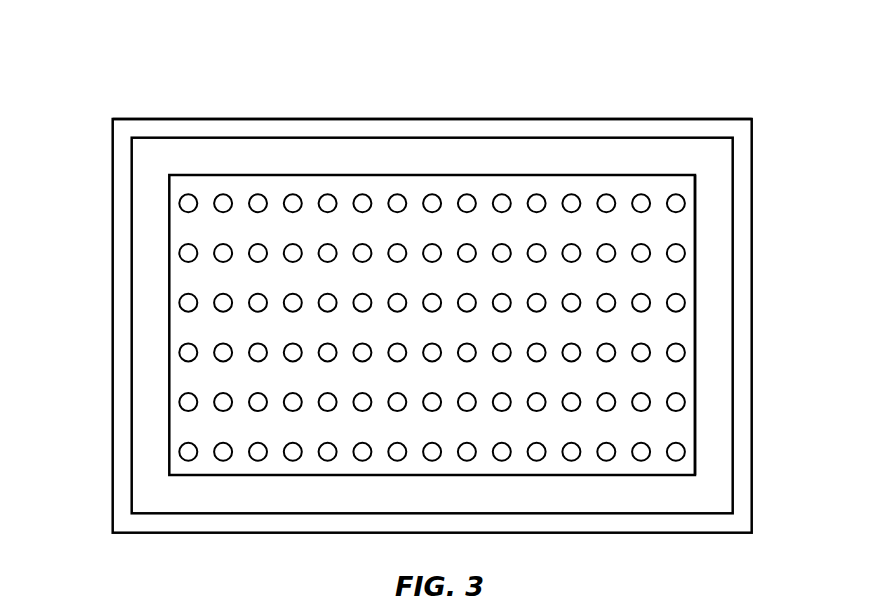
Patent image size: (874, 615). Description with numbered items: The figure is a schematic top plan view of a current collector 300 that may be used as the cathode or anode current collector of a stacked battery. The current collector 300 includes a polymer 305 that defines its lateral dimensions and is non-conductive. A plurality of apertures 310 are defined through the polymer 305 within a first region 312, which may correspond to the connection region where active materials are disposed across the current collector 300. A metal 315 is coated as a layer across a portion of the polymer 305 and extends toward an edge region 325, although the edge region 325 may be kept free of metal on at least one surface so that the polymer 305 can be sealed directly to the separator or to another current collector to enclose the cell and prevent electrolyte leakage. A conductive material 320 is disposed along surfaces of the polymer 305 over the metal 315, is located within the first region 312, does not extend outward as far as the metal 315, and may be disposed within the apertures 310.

The current collector 300 is at (95, 80).
The polymer 305 is at (752, 313).
The apertures 310 is at (327, 194).
The first region 312 is at (213, 173).
The metal 315 is at (647, 137).
The conductive material 320 is at (695, 232).
The edge region 325 is at (537, 118).